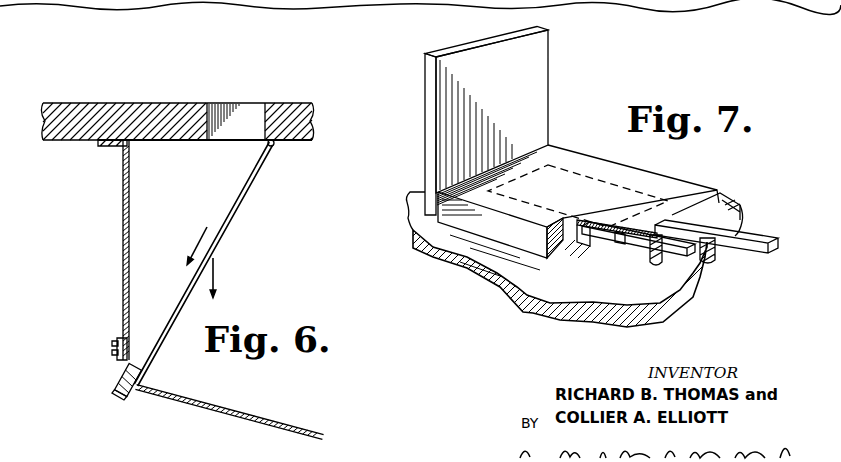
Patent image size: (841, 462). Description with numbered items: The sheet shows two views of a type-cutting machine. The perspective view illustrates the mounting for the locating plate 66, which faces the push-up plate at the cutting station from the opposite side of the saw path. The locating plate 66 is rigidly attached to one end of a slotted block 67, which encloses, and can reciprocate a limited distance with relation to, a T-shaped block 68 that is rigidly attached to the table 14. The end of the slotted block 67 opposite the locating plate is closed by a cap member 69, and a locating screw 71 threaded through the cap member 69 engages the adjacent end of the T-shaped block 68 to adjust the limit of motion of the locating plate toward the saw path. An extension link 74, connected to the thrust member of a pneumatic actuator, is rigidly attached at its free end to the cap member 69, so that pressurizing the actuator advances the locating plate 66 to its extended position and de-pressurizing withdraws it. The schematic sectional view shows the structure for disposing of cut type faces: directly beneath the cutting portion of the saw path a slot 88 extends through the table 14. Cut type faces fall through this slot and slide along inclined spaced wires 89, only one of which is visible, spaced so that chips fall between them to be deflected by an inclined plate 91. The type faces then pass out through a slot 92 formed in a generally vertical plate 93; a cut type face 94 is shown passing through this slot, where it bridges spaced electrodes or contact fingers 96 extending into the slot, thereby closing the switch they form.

In FIG. 6, the table 14 is at (135, 112).
In FIG. 7, the table 14 is at (545, 289).
In FIG. 6, the slot 88 is at (243, 117).
In FIG. 6, the inclined spaced wires 89 is at (237, 203).
In FIG. 6, the inclined plate 91 is at (200, 413).
In FIG. 6, the slot 92 is at (115, 372).
In FIG. 6, the generally vertical plate 93 is at (123, 207).
In FIG. 6, the cut type face 94 is at (139, 366).
In FIG. 6, the electrodes or contact fingers 96 is at (118, 388).
In FIG. 7, the locating plate 66 is at (492, 87).
In FIG. 7, the slotted block 67 is at (622, 178).
In FIG. 7, the T-shaped block 68 is at (605, 233).
In FIG. 7, the cap member 69 is at (718, 208).
In FIG. 7, the locating screw 71 is at (663, 264).
In FIG. 7, the extension link 74 is at (747, 254).